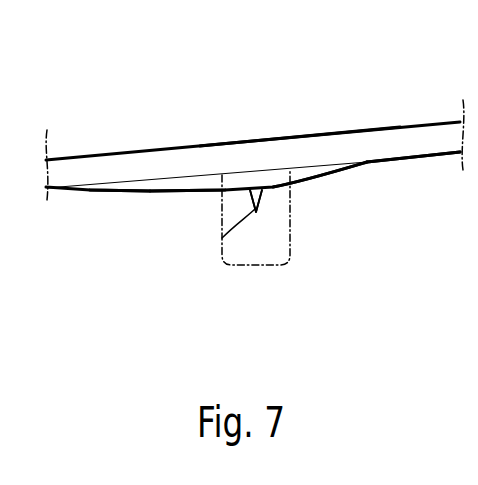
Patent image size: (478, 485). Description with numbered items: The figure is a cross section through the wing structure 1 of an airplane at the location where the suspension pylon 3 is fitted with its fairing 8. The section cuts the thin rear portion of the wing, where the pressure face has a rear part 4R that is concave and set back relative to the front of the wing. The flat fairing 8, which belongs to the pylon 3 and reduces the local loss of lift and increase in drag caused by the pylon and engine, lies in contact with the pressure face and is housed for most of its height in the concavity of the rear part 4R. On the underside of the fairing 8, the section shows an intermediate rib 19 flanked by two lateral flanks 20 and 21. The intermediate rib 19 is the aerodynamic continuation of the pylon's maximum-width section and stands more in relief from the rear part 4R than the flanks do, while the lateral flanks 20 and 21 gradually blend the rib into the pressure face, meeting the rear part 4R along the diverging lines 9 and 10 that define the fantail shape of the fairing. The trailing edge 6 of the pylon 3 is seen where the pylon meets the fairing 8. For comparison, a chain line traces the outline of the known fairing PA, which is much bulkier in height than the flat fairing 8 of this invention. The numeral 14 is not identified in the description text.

The wing structure 1 is at (166, 118).
The suspension pylon 3 is at (222, 238).
The rear part of the pressure face 4R is at (73, 193).
The trailing edge of the pylon 6 is at (257, 212).
The fairing 8 is at (250, 190).
The diverging line 9 is at (127, 189).
The diverging line 10 is at (368, 158).
The upper wall 14 is at (284, 137).
The intermediate rib 19 is at (267, 190).
The lateral flank 20 is at (190, 188).
The lateral flank 21 is at (327, 172).
The known fairing PA is at (292, 241).